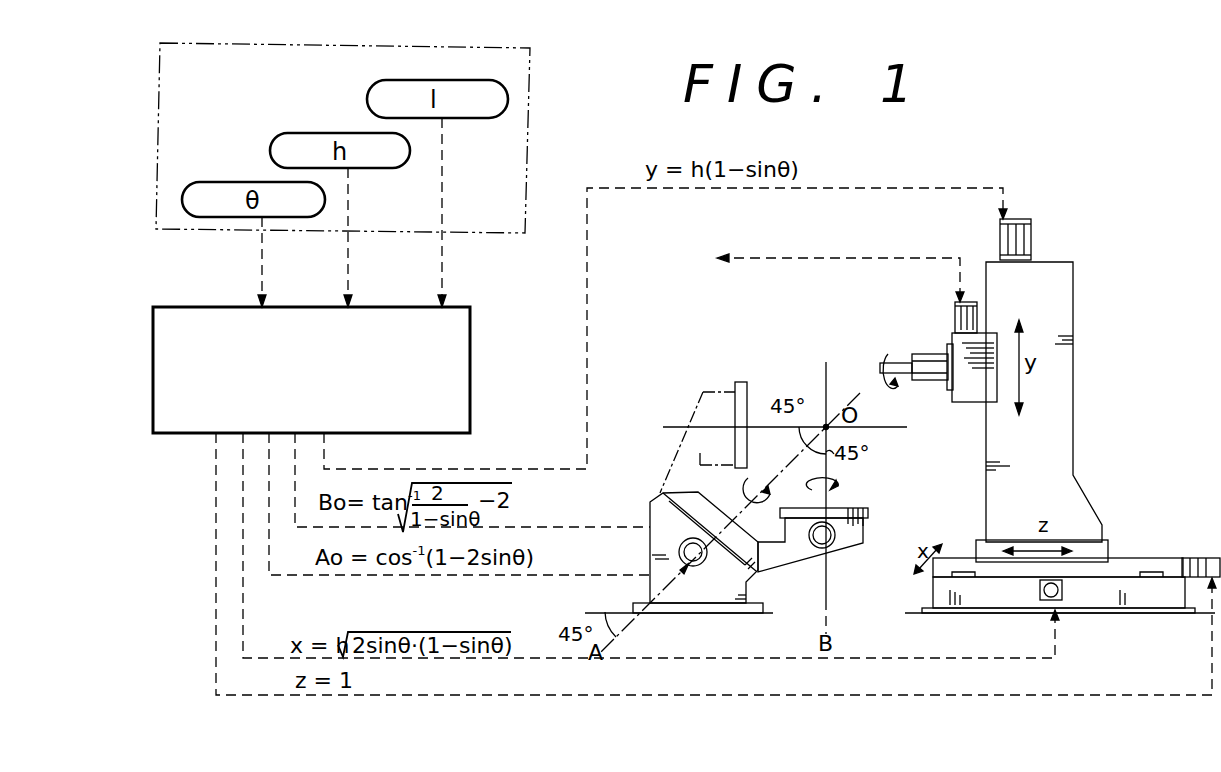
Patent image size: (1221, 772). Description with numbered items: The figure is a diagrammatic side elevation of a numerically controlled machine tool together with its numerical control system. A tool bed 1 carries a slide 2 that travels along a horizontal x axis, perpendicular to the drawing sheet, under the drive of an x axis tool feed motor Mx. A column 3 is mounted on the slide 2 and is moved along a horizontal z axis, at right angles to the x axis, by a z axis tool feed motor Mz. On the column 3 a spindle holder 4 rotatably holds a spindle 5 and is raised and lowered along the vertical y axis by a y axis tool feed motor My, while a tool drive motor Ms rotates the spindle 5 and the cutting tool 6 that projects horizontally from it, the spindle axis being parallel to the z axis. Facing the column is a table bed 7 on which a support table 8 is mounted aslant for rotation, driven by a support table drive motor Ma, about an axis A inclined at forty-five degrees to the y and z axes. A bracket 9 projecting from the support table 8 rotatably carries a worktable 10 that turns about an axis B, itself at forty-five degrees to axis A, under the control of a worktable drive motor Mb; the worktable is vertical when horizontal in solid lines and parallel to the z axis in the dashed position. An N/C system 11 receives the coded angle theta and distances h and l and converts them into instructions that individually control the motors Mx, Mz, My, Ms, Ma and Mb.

The tool bed 1 is at (1153, 606).
The slide 2 is at (1127, 560).
The column 3 is at (1073, 497).
The spindle holder 4 is at (964, 403).
The spindle 5 is at (925, 358).
The cutting tool 6 is at (880, 370).
The table bed 7 is at (659, 509).
The support table 8 is at (686, 490).
The bracket 9 is at (785, 560).
The worktable 10 is at (866, 508).
The N/C system 11 is at (466, 410).
The support table drive motor Ma is at (700, 566).
The worktable drive motor Mb is at (832, 548).
The tool drive motor Ms is at (955, 318).
The x axis tool feed motor Mx is at (1063, 590).
The y axis tool feed motor My is at (1031, 233).
The z axis tool feed motor Mz is at (1201, 558).